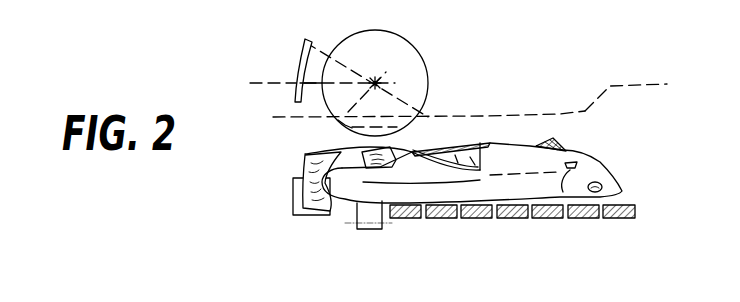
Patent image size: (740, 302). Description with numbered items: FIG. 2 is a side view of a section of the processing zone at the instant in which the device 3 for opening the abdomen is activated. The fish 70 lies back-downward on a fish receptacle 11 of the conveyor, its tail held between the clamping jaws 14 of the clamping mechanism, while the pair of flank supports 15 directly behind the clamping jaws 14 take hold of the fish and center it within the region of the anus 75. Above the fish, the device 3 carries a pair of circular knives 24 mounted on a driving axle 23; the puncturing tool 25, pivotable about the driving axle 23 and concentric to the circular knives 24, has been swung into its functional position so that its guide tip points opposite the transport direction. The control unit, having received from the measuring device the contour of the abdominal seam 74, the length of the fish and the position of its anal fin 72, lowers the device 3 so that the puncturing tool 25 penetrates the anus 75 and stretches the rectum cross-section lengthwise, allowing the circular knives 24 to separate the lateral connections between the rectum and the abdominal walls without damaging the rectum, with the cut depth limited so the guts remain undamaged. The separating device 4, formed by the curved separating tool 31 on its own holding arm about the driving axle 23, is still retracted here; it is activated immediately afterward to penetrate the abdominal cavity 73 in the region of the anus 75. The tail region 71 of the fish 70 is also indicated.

The device for opening the abdomen 3 is at (380, 77).
The device for separating the rectum 4 is at (266, 56).
The fish receptacle 11 is at (559, 230).
The clamping jaws 14 is at (297, 186).
The flank supports 15 is at (357, 210).
The driving axle 23 is at (392, 62).
The circular knives 24 is at (410, 53).
The puncturing tool 25 is at (345, 125).
The separating tool 31 is at (302, 48).
The fish 70 is at (601, 143).
The tail fin 71 is at (304, 158).
The anal fin 72 is at (305, 154).
The abdominal cavity 73 is at (480, 142).
The abdominal seam 74 is at (545, 116).
The anus 75 is at (413, 150).